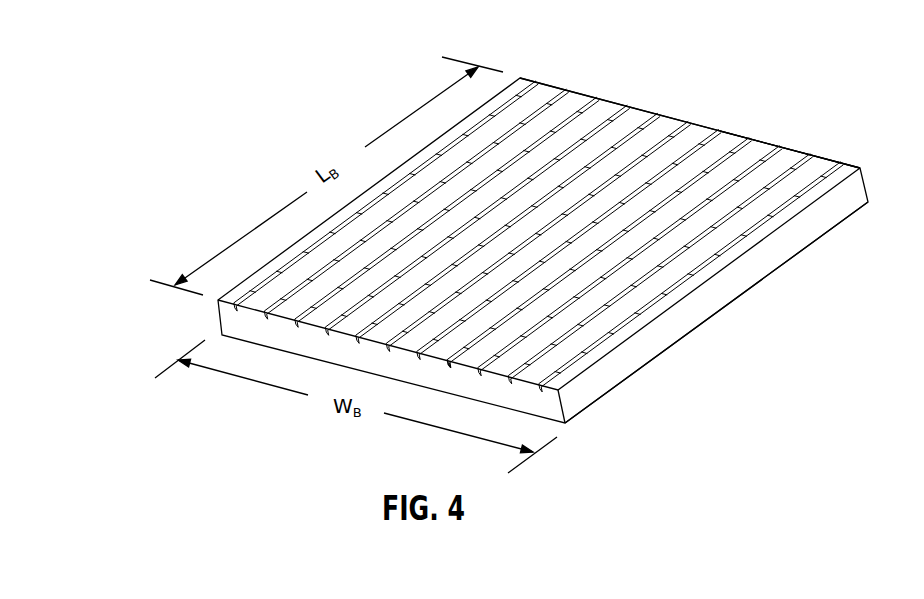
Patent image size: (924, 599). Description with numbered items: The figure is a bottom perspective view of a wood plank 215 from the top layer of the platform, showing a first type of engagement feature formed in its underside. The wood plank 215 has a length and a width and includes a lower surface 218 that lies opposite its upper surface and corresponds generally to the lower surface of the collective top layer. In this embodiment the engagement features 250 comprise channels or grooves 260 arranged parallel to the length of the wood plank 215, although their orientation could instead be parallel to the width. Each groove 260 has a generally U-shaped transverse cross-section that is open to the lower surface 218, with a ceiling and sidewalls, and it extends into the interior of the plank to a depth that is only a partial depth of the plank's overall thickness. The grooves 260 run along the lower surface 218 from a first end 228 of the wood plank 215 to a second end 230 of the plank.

The wood plank 215 is at (727, 350).
The lower surface 218 is at (333, 0).
The first end 228 is at (470, 381).
The second end 230 is at (803, 144).
The engagement features 250 is at (452, 0).
The grooves 260 is at (633, 135).